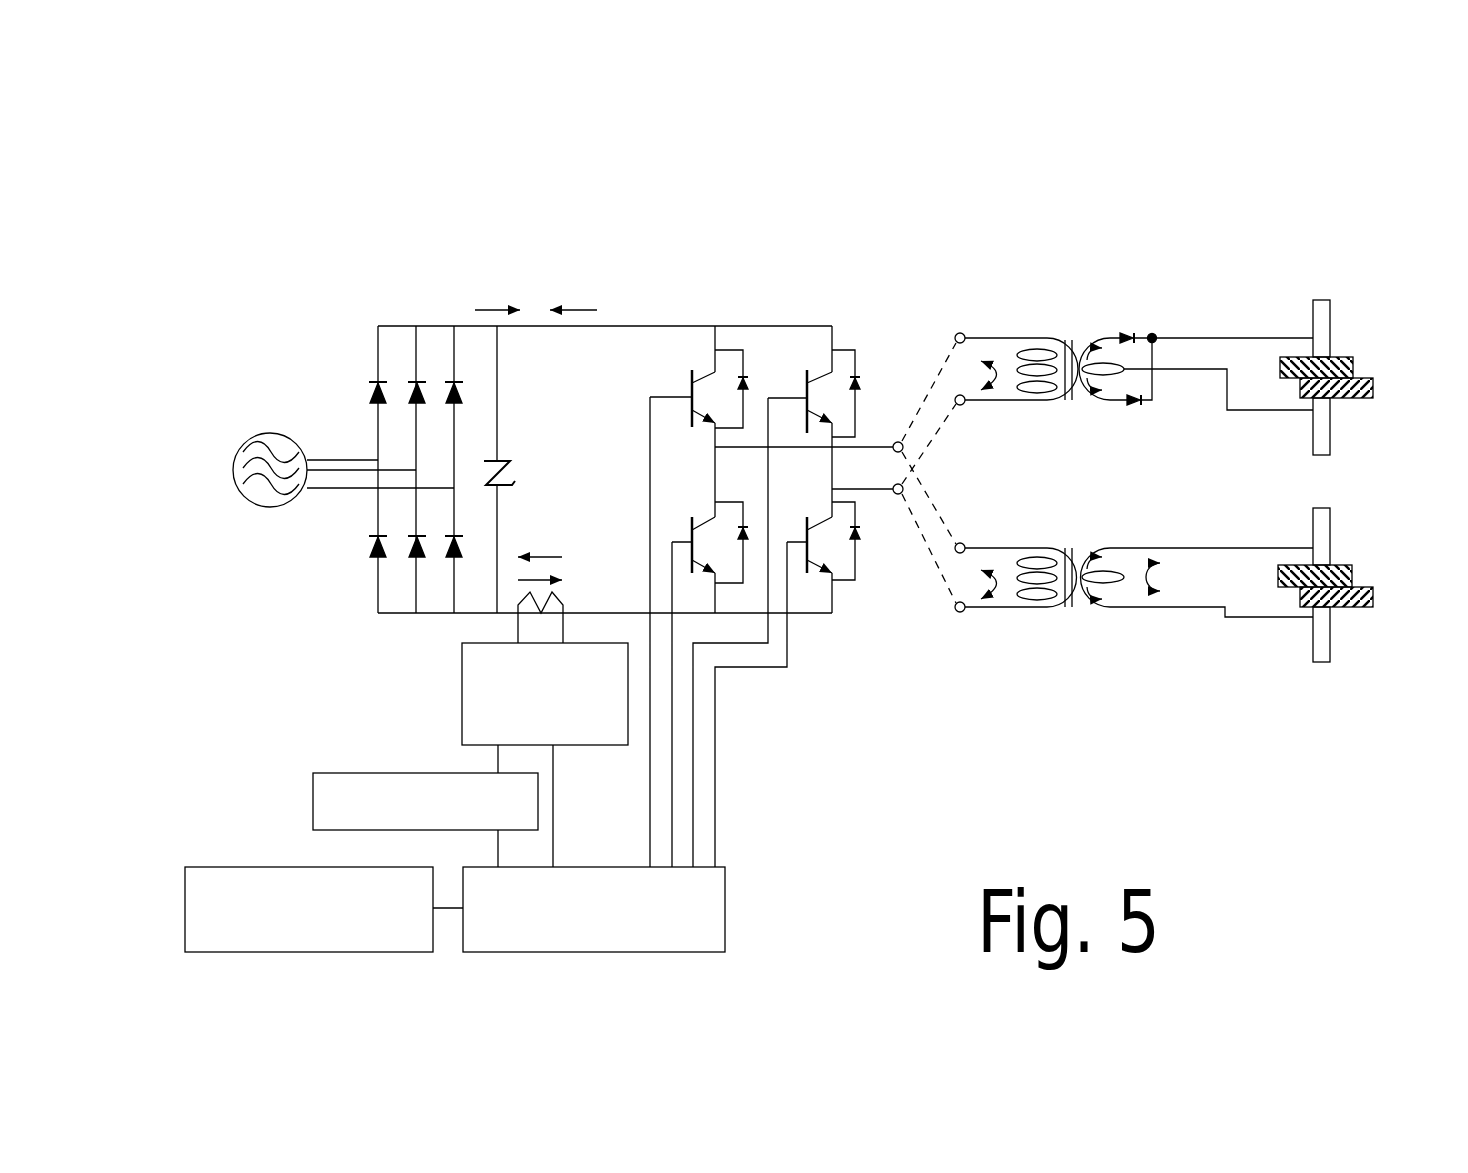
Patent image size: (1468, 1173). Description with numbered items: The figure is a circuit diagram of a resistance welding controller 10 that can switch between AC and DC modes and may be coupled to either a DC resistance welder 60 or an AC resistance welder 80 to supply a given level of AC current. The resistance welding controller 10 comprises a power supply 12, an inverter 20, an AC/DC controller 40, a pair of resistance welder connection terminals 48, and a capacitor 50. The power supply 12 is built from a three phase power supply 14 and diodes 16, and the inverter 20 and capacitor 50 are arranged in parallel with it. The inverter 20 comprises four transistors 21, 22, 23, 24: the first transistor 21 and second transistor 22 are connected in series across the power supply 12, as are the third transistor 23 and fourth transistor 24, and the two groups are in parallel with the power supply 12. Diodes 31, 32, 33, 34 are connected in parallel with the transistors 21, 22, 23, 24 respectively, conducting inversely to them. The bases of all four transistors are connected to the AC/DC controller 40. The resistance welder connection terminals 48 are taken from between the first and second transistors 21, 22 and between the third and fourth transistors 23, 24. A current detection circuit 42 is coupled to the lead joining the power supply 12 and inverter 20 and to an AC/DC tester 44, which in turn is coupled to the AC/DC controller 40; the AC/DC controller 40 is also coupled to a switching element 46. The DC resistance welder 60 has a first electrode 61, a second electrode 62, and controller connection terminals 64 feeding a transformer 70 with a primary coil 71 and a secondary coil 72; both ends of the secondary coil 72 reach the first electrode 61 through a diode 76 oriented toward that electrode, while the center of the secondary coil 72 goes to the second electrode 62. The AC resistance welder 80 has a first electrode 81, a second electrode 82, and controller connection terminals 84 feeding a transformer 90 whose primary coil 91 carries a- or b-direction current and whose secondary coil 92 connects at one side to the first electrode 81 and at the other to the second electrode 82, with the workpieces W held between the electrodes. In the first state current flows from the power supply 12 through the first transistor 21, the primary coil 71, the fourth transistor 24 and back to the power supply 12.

The resistance welding controller 10 is at (633, 243).
The power supply 12 is at (440, 307).
The three phase power supply 14 is at (282, 433).
The diodes 16 is at (447, 412).
The inverter 20 is at (738, 308).
The first transistor 21 is at (680, 386).
The second transistor 22 is at (682, 527).
The third transistor 23 is at (792, 372).
The fourth transistor 24 is at (795, 528).
The diode 31 is at (752, 367).
The diode 32 is at (757, 553).
The diode 33 is at (868, 363).
The diode 34 is at (866, 548).
The AC/DC controller 40 is at (725, 890).
The current detection circuit 42 is at (462, 665).
The AC/DC tester 44 is at (340, 773).
The switching element 46 is at (245, 867).
The resistance welder connection terminals 48 is at (883, 467).
The capacitor 50 is at (540, 467).
The DC resistance welder 60 is at (1182, 312).
The first electrode 61 is at (1330, 318).
The second electrode 62 is at (1330, 420).
The controller connection terminals 64 is at (950, 382).
The transformer 70 is at (1065, 315).
The primary coil 71 is at (1022, 425).
The secondary coil 72 is at (1090, 415).
The diode 76 is at (1127, 317).
The AC resistance welder 80 is at (1110, 522).
The first electrode 81 is at (1330, 542).
The second electrode 82 is at (1330, 633).
The controller connection terminals 84 is at (947, 565).
The transformer 90 is at (1070, 615).
The primary coil 91 is at (1025, 615).
The secondary coil 92 is at (1098, 618).
The workpieces W is at (1373, 386).